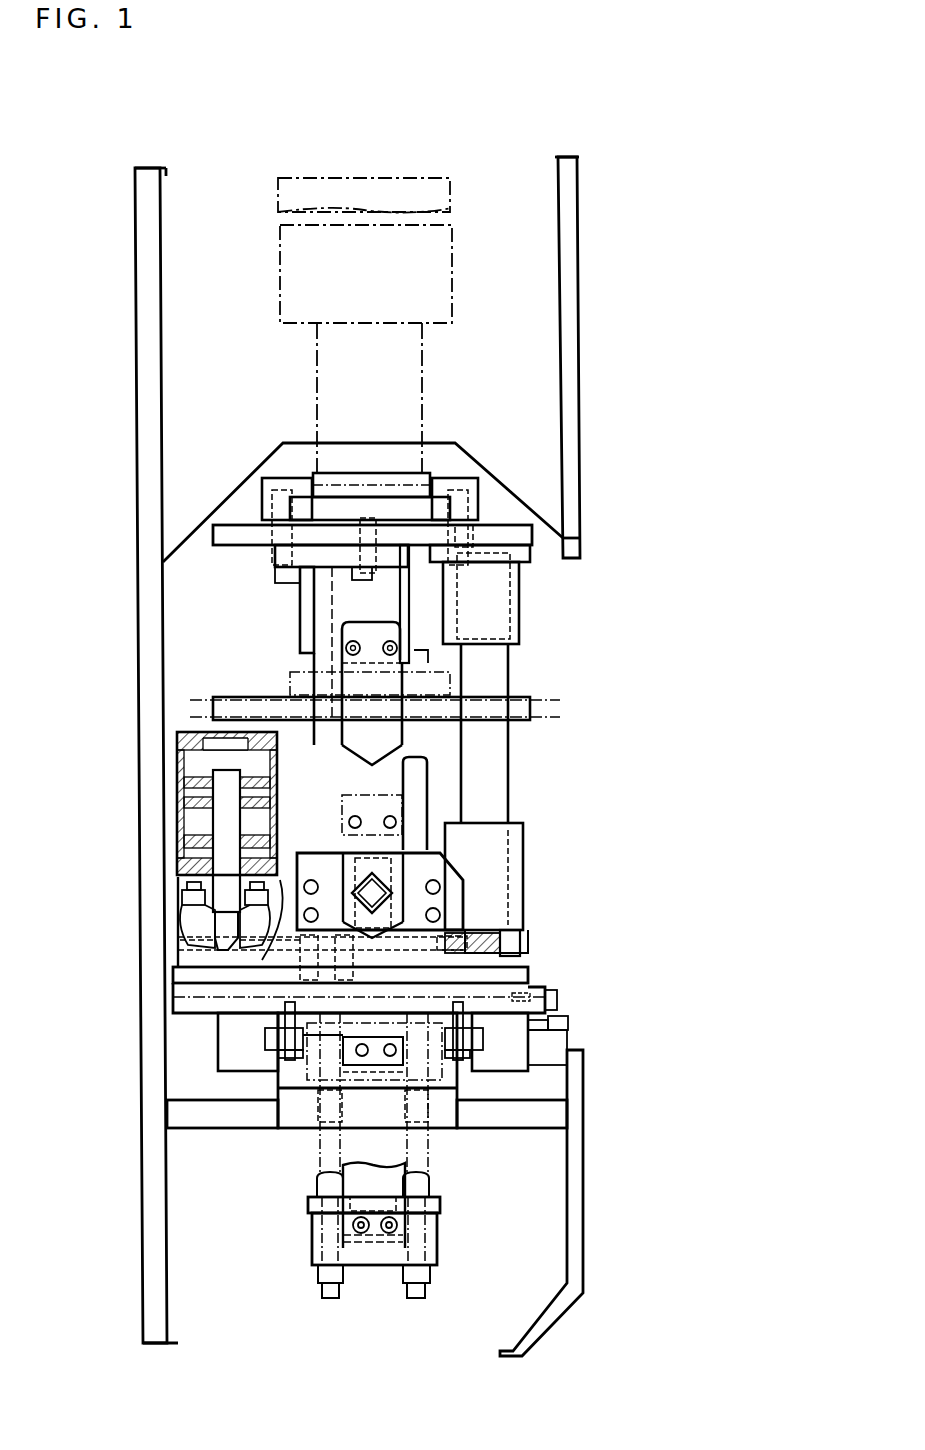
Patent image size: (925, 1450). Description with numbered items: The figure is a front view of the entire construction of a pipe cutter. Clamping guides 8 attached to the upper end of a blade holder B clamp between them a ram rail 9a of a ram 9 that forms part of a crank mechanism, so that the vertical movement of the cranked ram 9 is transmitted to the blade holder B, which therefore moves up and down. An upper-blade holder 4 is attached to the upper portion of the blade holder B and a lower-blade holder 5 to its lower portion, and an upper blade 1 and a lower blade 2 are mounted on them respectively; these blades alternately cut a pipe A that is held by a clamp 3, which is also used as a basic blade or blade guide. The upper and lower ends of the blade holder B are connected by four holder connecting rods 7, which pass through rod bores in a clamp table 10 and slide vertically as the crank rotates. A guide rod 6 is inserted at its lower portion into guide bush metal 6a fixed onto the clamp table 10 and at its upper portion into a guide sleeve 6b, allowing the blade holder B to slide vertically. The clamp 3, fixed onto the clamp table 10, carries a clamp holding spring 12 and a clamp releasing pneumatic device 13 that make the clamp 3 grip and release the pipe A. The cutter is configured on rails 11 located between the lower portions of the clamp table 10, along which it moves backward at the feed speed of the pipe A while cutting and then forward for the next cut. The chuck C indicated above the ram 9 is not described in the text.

The upper blade 1 is at (400, 738).
The lower blade 2 is at (392, 1212).
The clamp 3 is at (454, 905).
The upper-blade holder 4 is at (398, 616).
The lower-blade holder 5 is at (435, 1242).
The guide rod 6 is at (498, 764).
The guide bush metal 6a is at (548, 895).
The guide sleeve 6b is at (520, 608).
The holder connecting rods 7 is at (316, 666).
The clamping guides 8 is at (262, 495).
The ram 9 is at (386, 410).
The ram rail 9a is at (420, 497).
The clamp table 10 is at (535, 997).
The rails 11 is at (264, 1064).
The clamp holding spring 12 is at (505, 932).
The clamp releasing pneumatic device 13 is at (177, 798).
The pipe A is at (352, 880).
The blade holder B is at (518, 677).
The chuck C is at (384, 282).